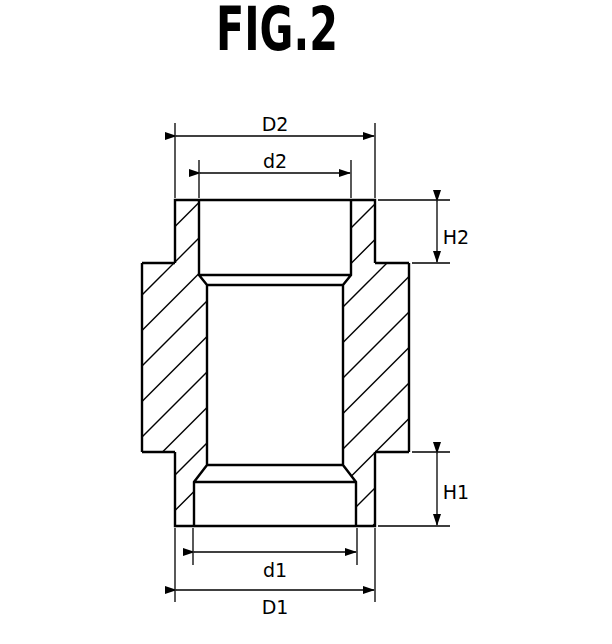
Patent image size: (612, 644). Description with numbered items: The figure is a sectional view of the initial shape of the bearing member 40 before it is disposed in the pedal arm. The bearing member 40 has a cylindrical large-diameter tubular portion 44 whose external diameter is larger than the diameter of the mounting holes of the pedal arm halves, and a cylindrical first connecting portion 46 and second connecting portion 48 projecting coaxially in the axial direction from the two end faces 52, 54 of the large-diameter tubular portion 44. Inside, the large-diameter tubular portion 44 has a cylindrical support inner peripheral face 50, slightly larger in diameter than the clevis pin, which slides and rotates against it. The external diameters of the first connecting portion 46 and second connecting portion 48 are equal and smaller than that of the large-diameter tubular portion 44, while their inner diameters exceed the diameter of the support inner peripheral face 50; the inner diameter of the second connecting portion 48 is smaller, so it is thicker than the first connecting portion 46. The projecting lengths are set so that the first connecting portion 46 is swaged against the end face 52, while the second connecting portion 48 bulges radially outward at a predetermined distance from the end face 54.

The bearing member 40 is at (306, 342).
The large-diameter tubular portion 44 is at (170, 348).
The first connecting portion 46 is at (193, 502).
The second connecting portion 48 is at (175, 227).
The support inner peripheral face 50 is at (335, 382).
The end face 52 is at (153, 456).
The end face 54 is at (155, 262).